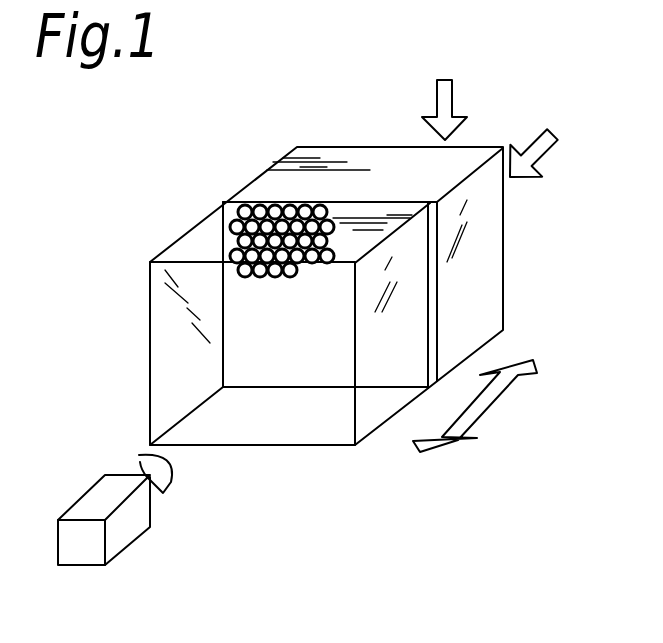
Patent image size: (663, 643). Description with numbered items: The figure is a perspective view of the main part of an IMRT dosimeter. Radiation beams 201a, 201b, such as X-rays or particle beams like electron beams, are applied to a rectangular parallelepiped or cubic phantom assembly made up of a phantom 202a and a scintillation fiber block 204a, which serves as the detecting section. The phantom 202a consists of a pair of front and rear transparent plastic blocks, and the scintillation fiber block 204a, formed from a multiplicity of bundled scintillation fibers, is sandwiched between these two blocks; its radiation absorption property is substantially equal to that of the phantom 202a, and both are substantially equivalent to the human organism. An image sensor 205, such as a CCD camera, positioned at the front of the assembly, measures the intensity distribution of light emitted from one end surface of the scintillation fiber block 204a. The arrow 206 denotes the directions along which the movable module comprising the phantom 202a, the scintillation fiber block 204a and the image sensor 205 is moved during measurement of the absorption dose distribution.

The radiation beam 201a is at (436, 97).
The radiation beam 201b is at (544, 136).
The phantom 202a is at (188, 248).
The scintillation fiber block 204a is at (247, 210).
The image sensor 205 is at (117, 520).
The arrow 206 is at (490, 402).